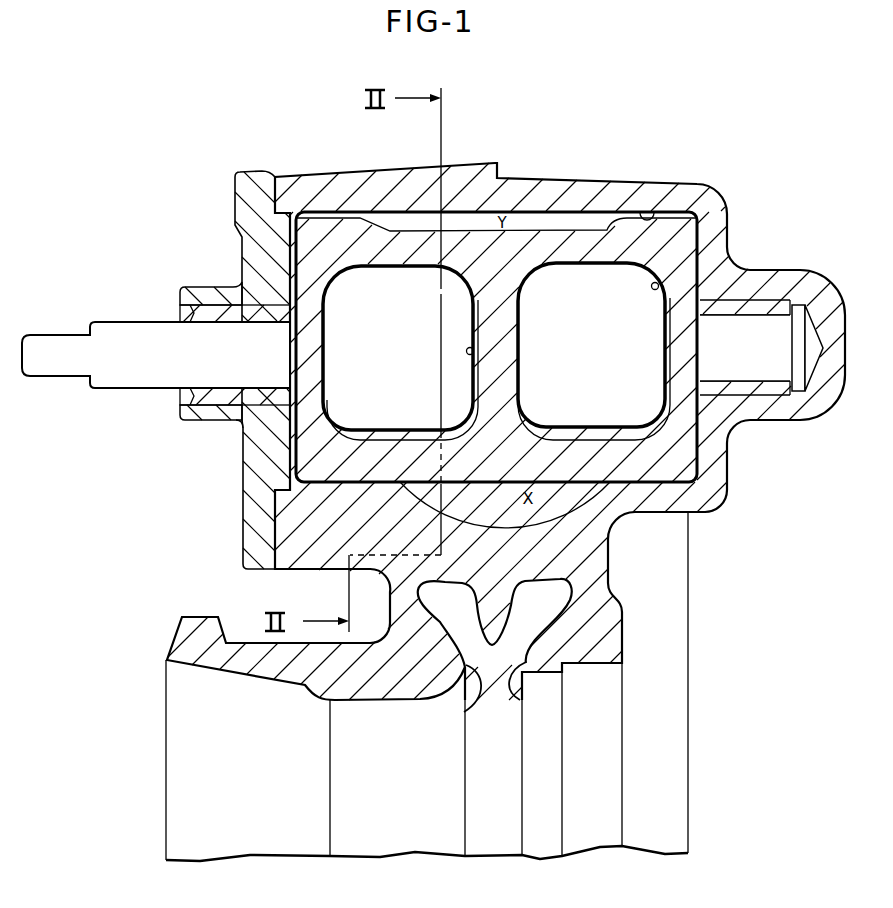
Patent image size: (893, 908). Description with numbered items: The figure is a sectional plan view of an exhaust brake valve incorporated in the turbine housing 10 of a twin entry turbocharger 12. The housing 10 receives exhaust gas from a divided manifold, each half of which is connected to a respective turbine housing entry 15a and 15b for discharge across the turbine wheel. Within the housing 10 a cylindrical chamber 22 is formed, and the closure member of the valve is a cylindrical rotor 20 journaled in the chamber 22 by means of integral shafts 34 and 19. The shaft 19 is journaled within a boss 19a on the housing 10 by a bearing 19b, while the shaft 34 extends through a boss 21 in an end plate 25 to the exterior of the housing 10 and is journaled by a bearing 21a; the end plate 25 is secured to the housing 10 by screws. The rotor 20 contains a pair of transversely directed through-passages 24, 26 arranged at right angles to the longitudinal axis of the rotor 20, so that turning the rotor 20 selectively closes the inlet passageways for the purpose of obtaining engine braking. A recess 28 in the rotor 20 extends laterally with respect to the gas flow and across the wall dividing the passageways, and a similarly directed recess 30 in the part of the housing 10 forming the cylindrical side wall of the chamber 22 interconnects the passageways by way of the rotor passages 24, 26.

The turbine housing 10 is at (600, 570).
The twin entry turbocharger 12 is at (736, 462).
The turbine housing entry 15a is at (533, 694).
The turbine housing entry 15b is at (466, 700).
The shaft 19 is at (763, 310).
The boss 19a is at (832, 300).
The bearing 19b is at (742, 306).
The cylindrical rotor 20 is at (530, 238).
The boss 21 is at (200, 292).
The bearing 21a is at (208, 395).
The cylindrical chamber 22 is at (652, 212).
The through-passage 24 is at (658, 284).
The end plate 25 is at (242, 201).
The through-passage 26 is at (474, 350).
The recess 28 is at (405, 227).
The recess 30 is at (462, 512).
The shaft 34 is at (133, 322).